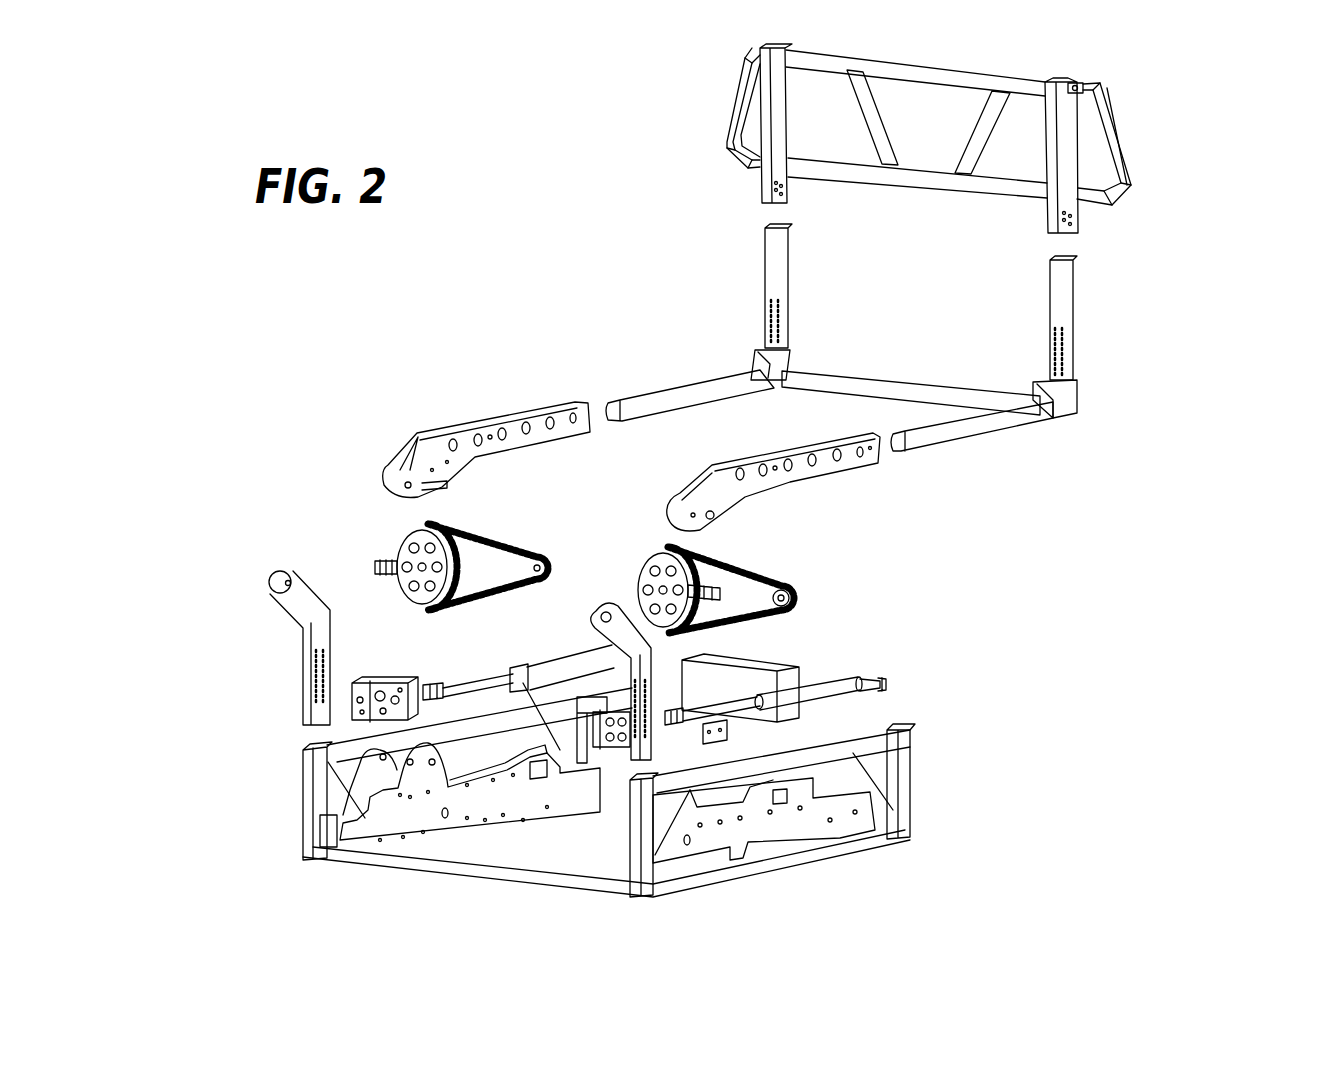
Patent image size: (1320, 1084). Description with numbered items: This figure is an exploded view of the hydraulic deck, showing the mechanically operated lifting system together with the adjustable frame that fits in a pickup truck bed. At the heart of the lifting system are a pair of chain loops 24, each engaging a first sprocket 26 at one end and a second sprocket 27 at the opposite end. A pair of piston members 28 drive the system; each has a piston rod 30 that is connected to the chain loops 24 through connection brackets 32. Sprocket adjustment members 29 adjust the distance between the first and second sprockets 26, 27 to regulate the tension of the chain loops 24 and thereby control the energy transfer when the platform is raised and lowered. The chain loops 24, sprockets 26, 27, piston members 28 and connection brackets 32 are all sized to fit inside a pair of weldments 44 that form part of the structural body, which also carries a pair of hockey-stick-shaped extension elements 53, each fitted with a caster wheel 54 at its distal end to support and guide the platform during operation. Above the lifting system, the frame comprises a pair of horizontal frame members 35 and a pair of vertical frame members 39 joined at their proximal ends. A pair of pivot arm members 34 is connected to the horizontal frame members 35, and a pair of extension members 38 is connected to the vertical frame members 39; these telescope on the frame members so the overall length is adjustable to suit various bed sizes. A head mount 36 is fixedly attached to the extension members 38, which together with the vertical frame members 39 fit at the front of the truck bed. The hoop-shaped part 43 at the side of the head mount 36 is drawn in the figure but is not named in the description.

The chain loops 24 is at (660, 553).
The first pair of sprockets 26 is at (660, 572).
The second pair of sprockets 27 is at (778, 572).
The piston members 28 is at (825, 685).
The sprocket adjustment members 29 is at (790, 795).
The piston rod 30 is at (736, 720).
The connection brackets 32 is at (368, 677).
The pivot arm members 34 is at (740, 460).
The horizontal frame members 35 is at (947, 422).
The head mount 36 is at (988, 80).
The extension members 38 is at (780, 137).
The vertical frame members 39 is at (1055, 300).
The side handle 43 is at (1080, 92).
The weldments 44 is at (676, 893).
The extension elements 53 is at (427, 630).
The caster wheel 54 is at (597, 611).